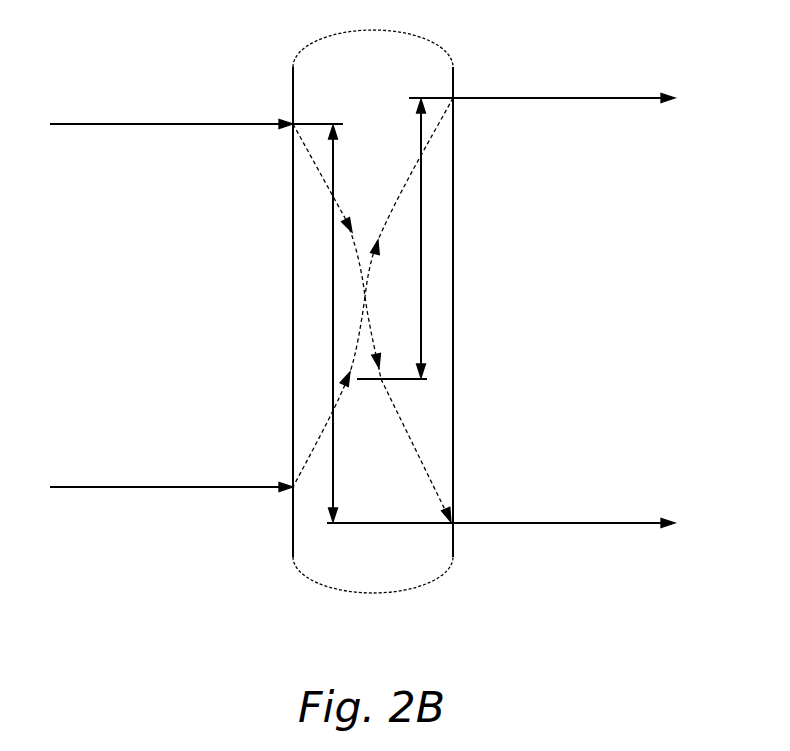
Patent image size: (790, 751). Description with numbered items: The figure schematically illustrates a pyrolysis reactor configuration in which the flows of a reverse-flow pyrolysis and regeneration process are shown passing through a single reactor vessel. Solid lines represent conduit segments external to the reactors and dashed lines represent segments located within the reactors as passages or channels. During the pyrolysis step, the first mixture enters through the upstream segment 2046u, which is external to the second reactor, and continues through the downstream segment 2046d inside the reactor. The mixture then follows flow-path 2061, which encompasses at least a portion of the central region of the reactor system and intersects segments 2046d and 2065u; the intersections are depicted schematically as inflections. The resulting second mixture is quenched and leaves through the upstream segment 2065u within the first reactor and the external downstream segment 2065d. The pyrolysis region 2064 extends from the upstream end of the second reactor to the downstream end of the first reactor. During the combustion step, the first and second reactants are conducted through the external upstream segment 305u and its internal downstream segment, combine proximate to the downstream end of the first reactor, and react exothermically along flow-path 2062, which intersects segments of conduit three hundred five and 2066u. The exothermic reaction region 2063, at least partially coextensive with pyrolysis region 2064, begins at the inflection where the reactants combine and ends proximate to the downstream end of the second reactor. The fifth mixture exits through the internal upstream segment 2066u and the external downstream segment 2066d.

The upstream segment of conduit 2046 2046u is at (150, 122).
The downstream segment of conduit 2046 2046d is at (320, 182).
The pyrolysis region 2064 is at (333, 278).
The flow-path 2062 is at (357, 337).
The flow-path 2061 is at (380, 335).
The exothermic reaction region 2063 is at (423, 258).
The upstream segment of conduit 2066 2066u is at (443, 140).
The downstream segment of conduit 2066 2066d is at (565, 97).
The upstream segment of conduit 2065 2065u is at (420, 455).
The downstream segment of conduit 2065 2065d is at (560, 525).
The upstream segment of conduit 305 305u is at (148, 489).